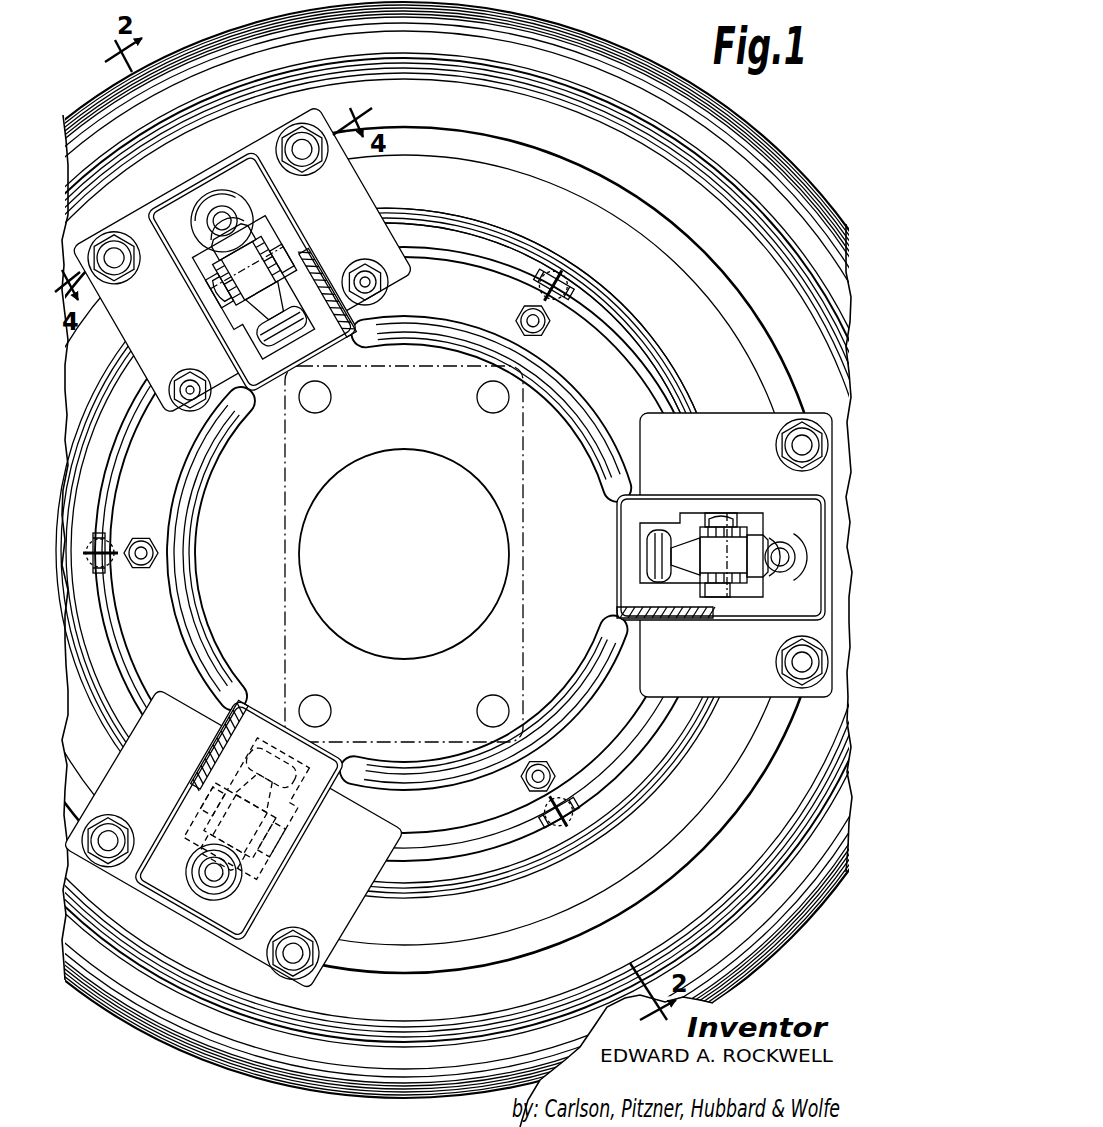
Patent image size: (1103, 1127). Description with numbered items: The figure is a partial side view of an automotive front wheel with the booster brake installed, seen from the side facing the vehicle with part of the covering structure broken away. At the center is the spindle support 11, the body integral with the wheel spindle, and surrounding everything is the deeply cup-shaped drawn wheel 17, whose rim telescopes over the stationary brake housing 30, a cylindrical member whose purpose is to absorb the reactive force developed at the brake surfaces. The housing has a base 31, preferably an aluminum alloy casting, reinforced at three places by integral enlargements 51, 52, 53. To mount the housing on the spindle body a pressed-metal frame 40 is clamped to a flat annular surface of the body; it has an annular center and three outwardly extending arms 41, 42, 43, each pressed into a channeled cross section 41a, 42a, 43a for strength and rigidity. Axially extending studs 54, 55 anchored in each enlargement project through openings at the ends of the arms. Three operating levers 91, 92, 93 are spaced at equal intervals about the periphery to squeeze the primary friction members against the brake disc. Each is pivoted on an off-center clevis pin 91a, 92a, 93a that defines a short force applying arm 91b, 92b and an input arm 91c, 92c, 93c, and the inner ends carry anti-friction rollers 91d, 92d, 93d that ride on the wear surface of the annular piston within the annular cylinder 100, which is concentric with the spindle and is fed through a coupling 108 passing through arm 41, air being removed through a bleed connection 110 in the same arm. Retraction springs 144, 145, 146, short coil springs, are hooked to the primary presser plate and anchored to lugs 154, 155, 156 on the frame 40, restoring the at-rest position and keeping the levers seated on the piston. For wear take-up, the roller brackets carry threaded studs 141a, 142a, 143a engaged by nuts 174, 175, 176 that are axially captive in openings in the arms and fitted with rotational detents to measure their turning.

The spindle support 11 is at (275, 602).
The wheel 17 is at (205, 1068).
The brake housing 30 is at (473, 973).
The base 31 is at (525, 952).
The frame 40 is at (458, 838).
The arm 41 is at (380, 213).
The arm 42 is at (757, 412).
The arm 43 is at (362, 908).
The channeled cross section 41a is at (303, 256).
The channeled cross section 42a is at (665, 497).
The channeled cross section 43a is at (310, 842).
The integral enlargement 51 is at (241, 150).
The integral enlargement 52 is at (786, 706).
The integral enlargement 53 is at (323, 984).
The stud 54 is at (803, 440).
The stud 55 is at (803, 665).
The lever 91 is at (282, 296).
The clevis pin 91a is at (277, 233).
The force applying arm 91b is at (197, 268).
The input arm 91c is at (226, 344).
The anti-friction roller 91d is at (268, 388).
The lever 92 is at (698, 560).
The clevis pin 92a is at (730, 513).
The force applying arm 92b is at (781, 536).
The input arm 92c is at (697, 513).
The anti-friction roller 92d is at (650, 554).
The lever 93 is at (246, 792).
The clevis pin 93a is at (207, 793).
The input arm 93c is at (277, 808).
The anti-friction roller 93d is at (246, 764).
The annular cylinder 100 is at (645, 598).
The coupling 108 is at (173, 390).
The bleed connection 110 is at (368, 280).
The threaded stud 141a is at (203, 186).
The threaded stud 142a is at (770, 570).
The threaded stud 143a is at (204, 876).
The retraction spring 144 is at (560, 822).
The retraction spring 145 is at (90, 533).
The retraction spring 146 is at (565, 275).
The lug 154 is at (545, 815).
The lug 155 is at (104, 590).
The lug 156 is at (582, 292).
The nut 174 is at (217, 222).
The nut 175 is at (778, 580).
The nut 176 is at (213, 890).